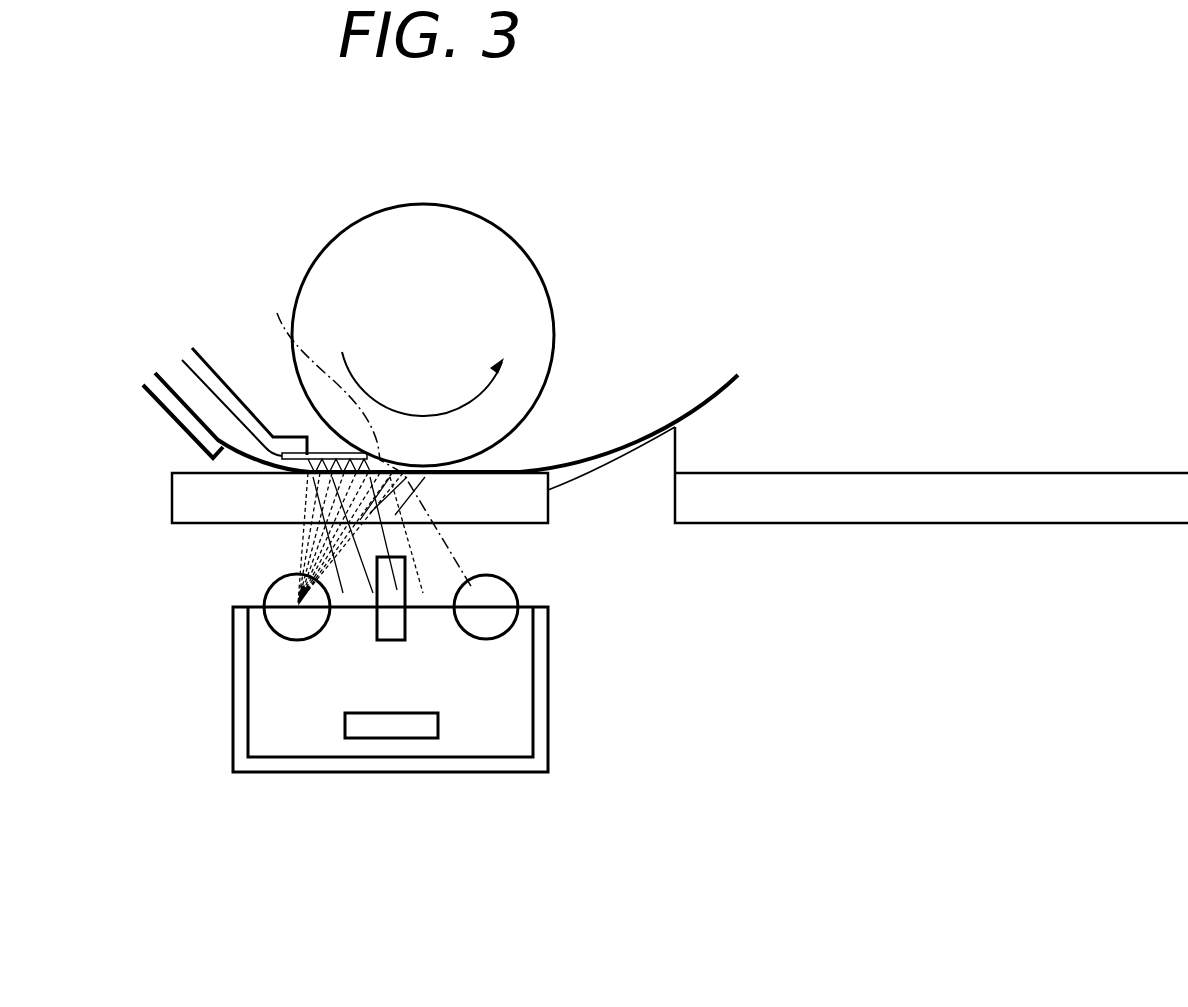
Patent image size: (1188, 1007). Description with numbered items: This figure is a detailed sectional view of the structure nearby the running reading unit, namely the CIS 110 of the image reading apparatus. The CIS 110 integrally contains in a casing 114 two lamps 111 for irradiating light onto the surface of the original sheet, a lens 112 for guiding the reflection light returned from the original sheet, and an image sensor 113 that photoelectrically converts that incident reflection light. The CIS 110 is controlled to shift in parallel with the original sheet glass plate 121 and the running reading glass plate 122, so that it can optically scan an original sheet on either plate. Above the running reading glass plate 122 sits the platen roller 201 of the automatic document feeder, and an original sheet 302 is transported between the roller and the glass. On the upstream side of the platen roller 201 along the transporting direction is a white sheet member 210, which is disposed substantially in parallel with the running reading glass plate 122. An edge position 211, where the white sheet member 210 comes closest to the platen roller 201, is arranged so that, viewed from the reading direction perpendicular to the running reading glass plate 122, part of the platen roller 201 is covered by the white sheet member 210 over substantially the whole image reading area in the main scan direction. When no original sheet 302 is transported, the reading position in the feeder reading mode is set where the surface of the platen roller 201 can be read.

The platen roller 201 is at (498, 223).
The edge position 211 is at (277, 313).
The white sheet member 210 is at (325, 453).
The original sheet 302 is at (620, 447).
The original sheet glass plate 121 is at (770, 473).
The running reading glass plate 122 is at (172, 498).
The lamp 111 is at (280, 633).
The lens 112 is at (398, 642).
The image sensor 113 is at (345, 723).
The casing 114 is at (477, 773).
The CIS (contact image sensor) 110 is at (369, 782).